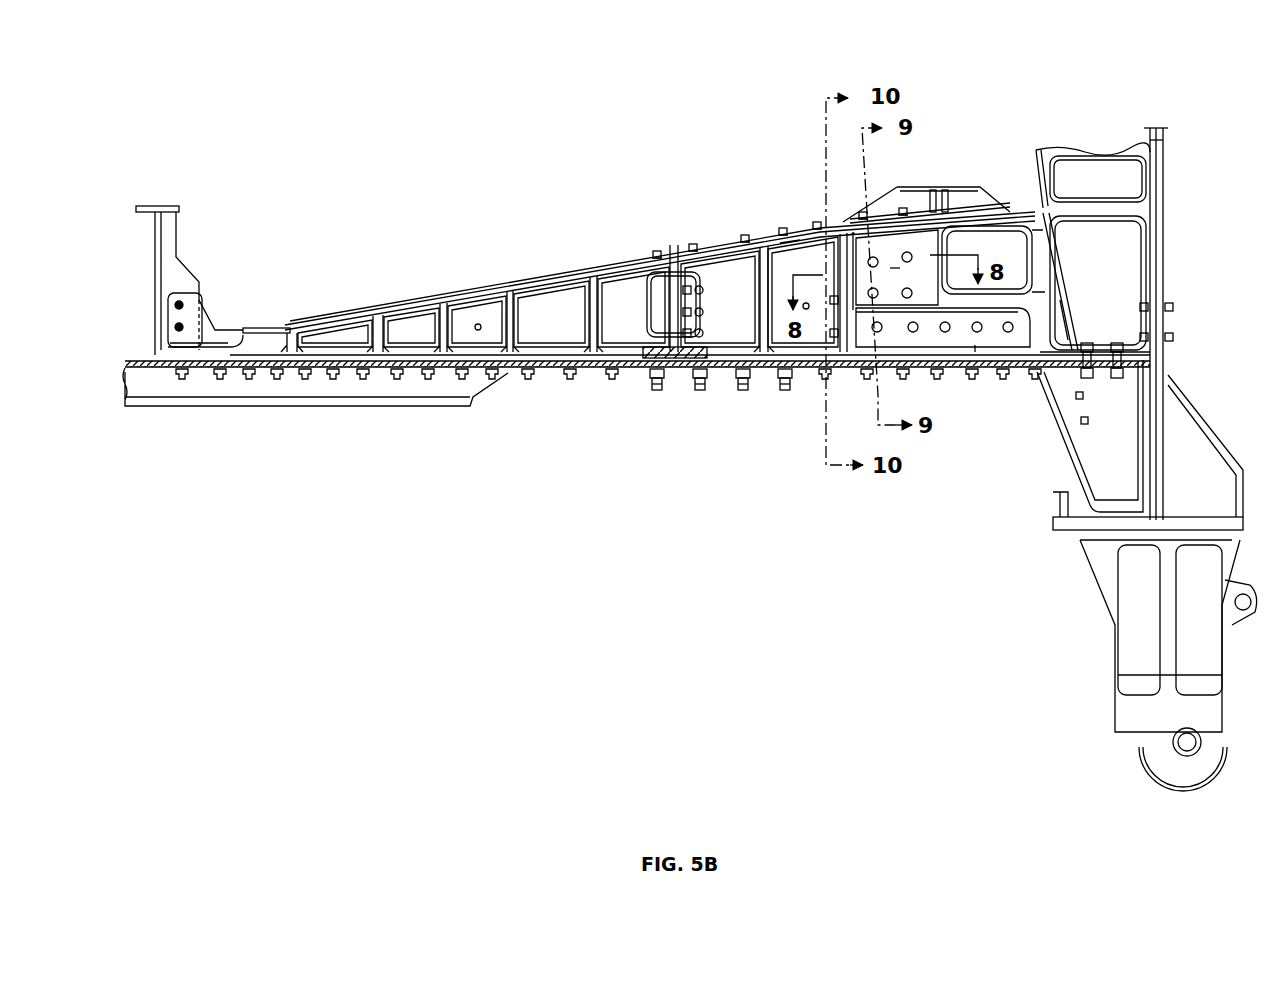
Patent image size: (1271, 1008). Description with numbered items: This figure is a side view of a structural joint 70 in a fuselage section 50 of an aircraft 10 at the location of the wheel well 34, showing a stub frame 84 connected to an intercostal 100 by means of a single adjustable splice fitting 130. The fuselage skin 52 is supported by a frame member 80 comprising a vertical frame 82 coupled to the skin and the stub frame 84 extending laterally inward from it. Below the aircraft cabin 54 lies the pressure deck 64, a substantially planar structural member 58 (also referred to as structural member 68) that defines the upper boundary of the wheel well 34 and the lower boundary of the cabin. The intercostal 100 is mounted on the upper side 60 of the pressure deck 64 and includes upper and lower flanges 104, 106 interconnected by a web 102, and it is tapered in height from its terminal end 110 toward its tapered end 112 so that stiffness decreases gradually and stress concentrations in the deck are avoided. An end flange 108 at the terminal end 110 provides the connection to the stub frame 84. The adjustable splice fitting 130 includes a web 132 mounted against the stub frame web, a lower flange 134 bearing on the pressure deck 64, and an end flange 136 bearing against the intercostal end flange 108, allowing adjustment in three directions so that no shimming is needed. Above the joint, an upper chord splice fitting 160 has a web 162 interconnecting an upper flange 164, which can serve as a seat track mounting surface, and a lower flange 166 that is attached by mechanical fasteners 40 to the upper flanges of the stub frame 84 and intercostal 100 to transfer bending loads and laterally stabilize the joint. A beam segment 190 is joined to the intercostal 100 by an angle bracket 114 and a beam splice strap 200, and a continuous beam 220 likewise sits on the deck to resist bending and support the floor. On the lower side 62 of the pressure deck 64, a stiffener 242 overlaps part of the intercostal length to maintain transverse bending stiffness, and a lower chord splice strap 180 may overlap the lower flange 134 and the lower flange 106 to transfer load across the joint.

The continuous beam 220 is at (150, 207).
The stiffener 242 is at (255, 410).
The tapered end 112 is at (290, 320).
The lower flange 106 is at (367, 345).
The web 102 is at (418, 330).
The upper flange 104 is at (469, 310).
The intercostal 100 is at (505, 292).
The upper side 60 is at (548, 320).
The angle bracket 114 is at (652, 290).
The beam segment 190 is at (672, 247).
The beam splice strap 200 is at (710, 250).
The terminal end 110 is at (766, 256).
The end flange 108 is at (793, 240).
The web 162 is at (853, 228).
The structural joint 70 is at (895, 265).
The upper chord splice fitting 160 is at (910, 200).
The upper flange 164 is at (965, 192).
The lower flange 166 is at (978, 215).
The aircraft cabin 54 is at (1049, 90).
The vertical frame 82 is at (1130, 172).
The frame member 80 is at (1140, 228).
The stub frame 84 is at (1038, 320).
The fuselage skin 52 is at (1158, 128).
The fuselage section 50 is at (1166, 140).
The aircraft 10 is at (1165, 152).
The adjustable splice fitting 130 is at (935, 345).
The web 132 is at (980, 345).
The lower flange 134 is at (898, 363).
The end flange 136 is at (865, 380).
The lower chord splice strap 180 is at (812, 370).
The pressure deck 64 is at (672, 375).
The structural member 58 is at (625, 360).
The lower side 62 is at (548, 375).
The structural member 68 is at (500, 375).
The mechanical fastener 40 is at (1122, 365).
The wheel well 34 is at (899, 610).